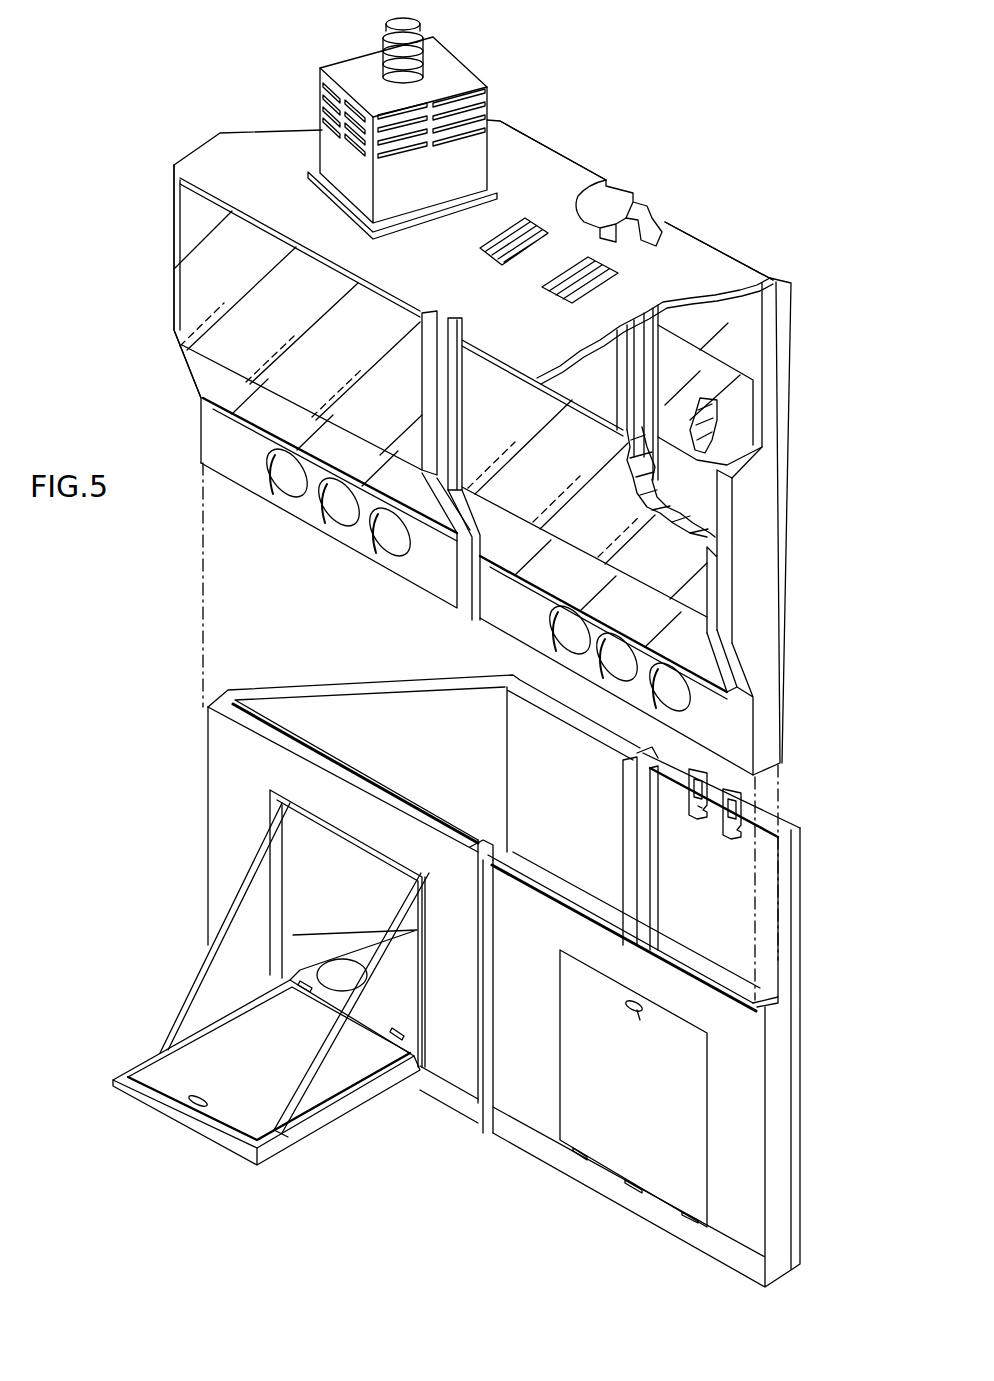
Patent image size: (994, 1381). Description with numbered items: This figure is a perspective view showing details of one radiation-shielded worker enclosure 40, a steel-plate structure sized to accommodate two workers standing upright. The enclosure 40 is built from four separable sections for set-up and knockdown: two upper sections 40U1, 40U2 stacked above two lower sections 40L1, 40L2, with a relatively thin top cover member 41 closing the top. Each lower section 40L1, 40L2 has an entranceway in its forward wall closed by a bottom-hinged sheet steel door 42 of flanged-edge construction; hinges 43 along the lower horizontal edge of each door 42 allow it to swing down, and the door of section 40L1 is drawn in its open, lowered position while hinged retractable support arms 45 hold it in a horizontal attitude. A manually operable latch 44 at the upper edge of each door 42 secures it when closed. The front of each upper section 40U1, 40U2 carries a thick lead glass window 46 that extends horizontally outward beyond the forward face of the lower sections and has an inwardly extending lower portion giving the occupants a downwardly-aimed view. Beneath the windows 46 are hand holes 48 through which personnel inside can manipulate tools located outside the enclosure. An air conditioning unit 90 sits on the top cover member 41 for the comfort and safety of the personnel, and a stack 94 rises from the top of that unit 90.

The radiation-shielded worker enclosure 40 is at (600, 183).
The upper section 40U1 is at (270, 142).
The upper section 40U2 is at (730, 260).
The lower section 40L1 is at (217, 750).
The lower section 40L2 is at (780, 1027).
The top cover member 41 is at (548, 160).
The door 42 is at (157, 1070).
The hinges 43 is at (308, 988).
The latch 44 is at (205, 1100).
The support arms 45 is at (397, 910).
The lead glass window 46 is at (193, 279).
The hand holes 48 is at (393, 533).
The air conditioning unit 90 is at (460, 70).
The stack / exhaust pipe 94 is at (400, 20).